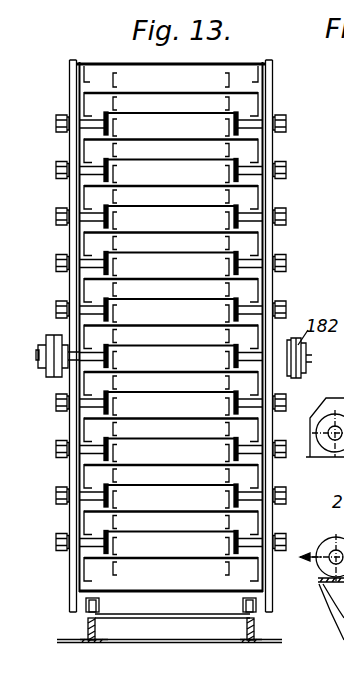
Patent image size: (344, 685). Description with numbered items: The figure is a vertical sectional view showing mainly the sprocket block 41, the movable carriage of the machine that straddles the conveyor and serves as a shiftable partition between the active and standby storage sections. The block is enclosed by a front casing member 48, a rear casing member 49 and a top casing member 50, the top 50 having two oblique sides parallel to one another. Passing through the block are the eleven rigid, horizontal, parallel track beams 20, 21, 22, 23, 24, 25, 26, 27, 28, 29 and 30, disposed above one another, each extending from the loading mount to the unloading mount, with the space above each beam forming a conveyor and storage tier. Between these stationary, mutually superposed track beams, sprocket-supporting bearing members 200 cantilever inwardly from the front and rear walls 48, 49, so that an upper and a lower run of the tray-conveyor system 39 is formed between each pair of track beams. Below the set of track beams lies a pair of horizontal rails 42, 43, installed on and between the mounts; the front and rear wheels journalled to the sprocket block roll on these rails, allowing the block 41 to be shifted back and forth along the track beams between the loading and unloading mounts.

The sprocket block 41 is at (66, 52).
The top casing member 50 is at (116, 63).
The rear casing member 49 is at (78, 100).
The front casing member 48 is at (263, 107).
The track beam 20 is at (260, 100).
The track beam 21 is at (274, 151).
The tray-conveyor system 39 is at (156, 133).
The sprocket-supporting bearing member 200 is at (240, 213).
The track beam 22 is at (86, 192).
The track beam 23 is at (86, 243).
The track beam 24 is at (259, 300).
The track beam 25 is at (82, 338).
The track beam 26 is at (82, 384).
The track beam 27 is at (83, 422).
The track beam 28 is at (262, 481).
The track beam 29 is at (83, 518).
The track beam 30 is at (88, 572).
The horizontal rail 43 is at (88, 625).
The horizontal rail 42 is at (254, 633).